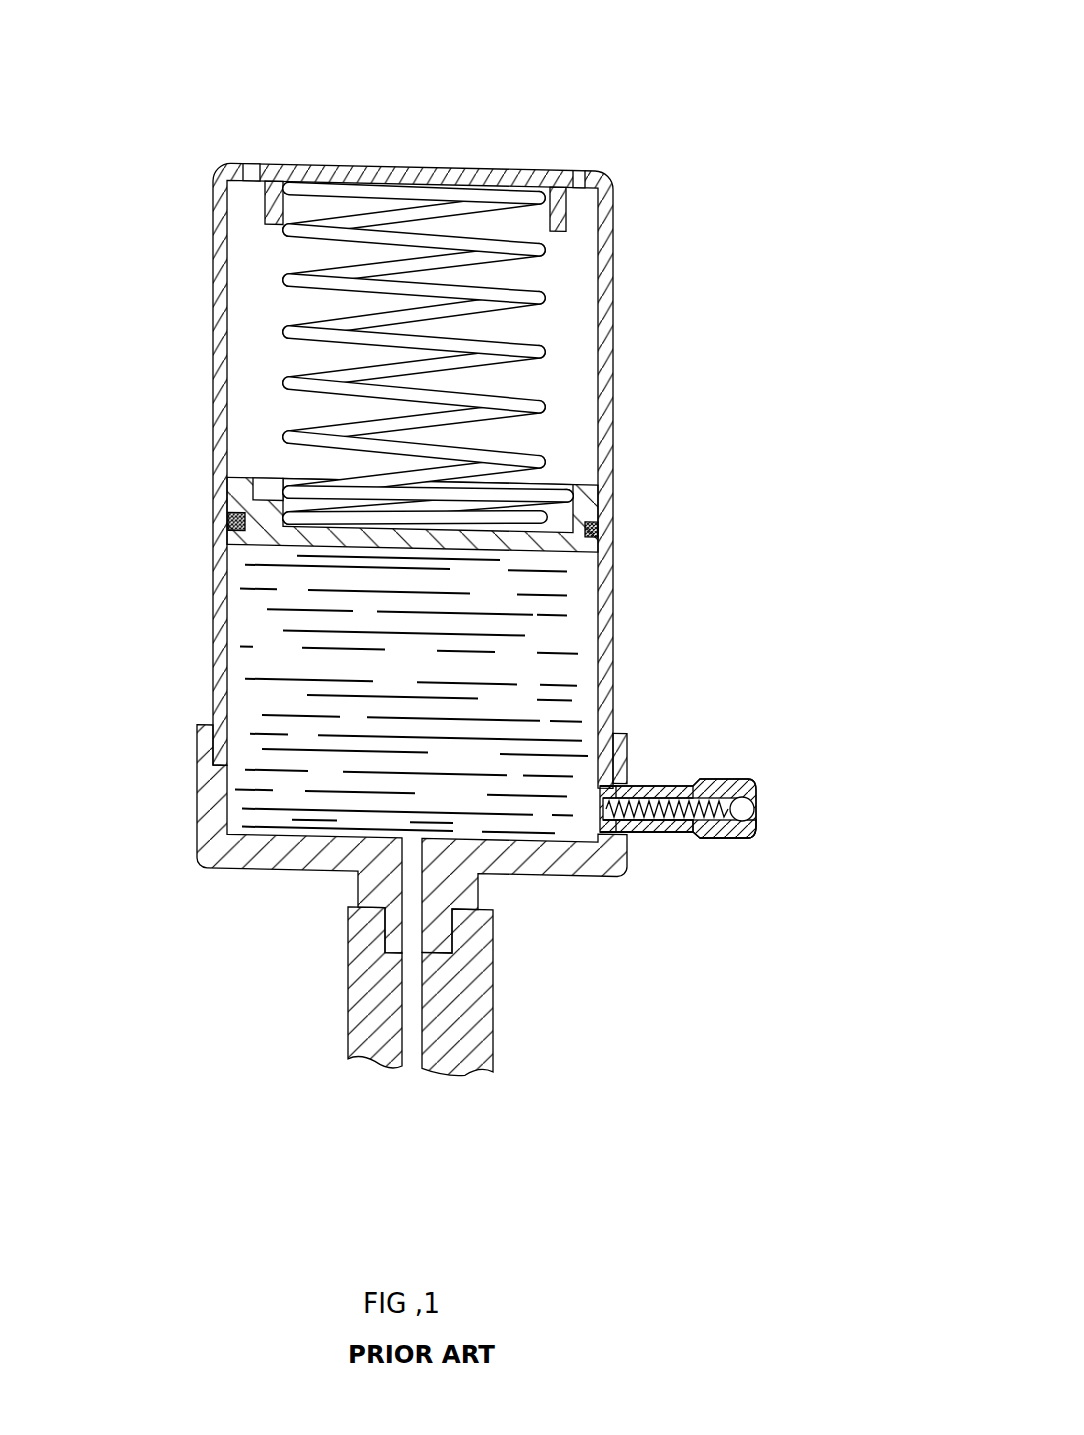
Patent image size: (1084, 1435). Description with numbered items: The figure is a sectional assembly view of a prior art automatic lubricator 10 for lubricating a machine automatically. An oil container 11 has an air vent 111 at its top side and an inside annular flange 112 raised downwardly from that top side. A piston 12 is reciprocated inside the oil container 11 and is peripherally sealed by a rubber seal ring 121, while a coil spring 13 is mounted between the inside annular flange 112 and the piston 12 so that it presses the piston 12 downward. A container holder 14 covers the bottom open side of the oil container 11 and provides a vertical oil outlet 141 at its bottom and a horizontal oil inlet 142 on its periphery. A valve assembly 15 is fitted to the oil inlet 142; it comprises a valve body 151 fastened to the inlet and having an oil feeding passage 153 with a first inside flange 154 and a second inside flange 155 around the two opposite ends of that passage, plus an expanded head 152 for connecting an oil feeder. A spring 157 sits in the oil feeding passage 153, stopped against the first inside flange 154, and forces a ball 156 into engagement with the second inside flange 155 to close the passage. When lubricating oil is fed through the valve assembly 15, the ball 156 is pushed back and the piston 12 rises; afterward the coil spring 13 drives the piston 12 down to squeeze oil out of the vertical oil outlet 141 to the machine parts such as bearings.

The automatic lubricator 10 is at (893, 38).
The oil container 11 is at (470, 172).
The air vent 111 is at (577, 176).
The inside annular flange 112 is at (270, 200).
The piston 12 is at (598, 490).
The rubber seal ring 121 is at (228, 522).
The coil spring 13 is at (287, 333).
The container holder 14 is at (215, 800).
The vertical oil outlet 141 is at (415, 884).
The horizontal oil inlet 142 is at (618, 770).
The valve assembly 15 is at (808, 825).
The valve body 151 is at (653, 787).
The expanded head 152 is at (733, 780).
The oil feeding passage 153 is at (672, 817).
The first inside flange 154 is at (632, 840).
The second inside flange 155 is at (760, 825).
The ball 156 is at (747, 810).
The spring 157 is at (702, 837).